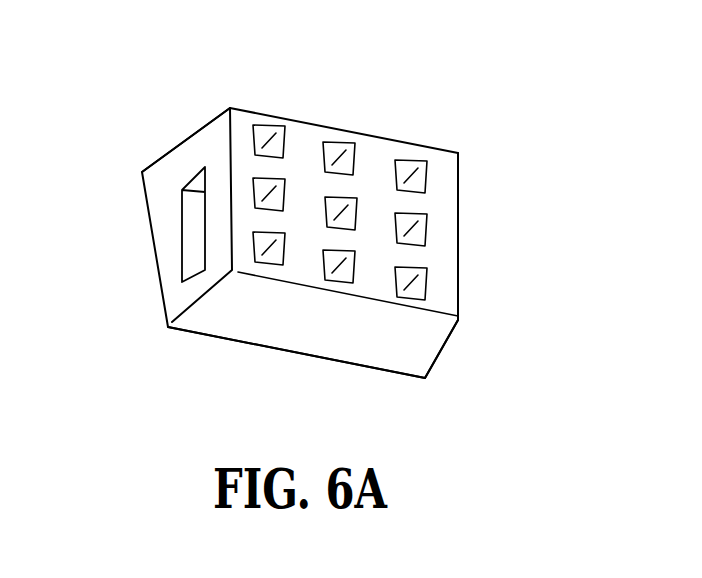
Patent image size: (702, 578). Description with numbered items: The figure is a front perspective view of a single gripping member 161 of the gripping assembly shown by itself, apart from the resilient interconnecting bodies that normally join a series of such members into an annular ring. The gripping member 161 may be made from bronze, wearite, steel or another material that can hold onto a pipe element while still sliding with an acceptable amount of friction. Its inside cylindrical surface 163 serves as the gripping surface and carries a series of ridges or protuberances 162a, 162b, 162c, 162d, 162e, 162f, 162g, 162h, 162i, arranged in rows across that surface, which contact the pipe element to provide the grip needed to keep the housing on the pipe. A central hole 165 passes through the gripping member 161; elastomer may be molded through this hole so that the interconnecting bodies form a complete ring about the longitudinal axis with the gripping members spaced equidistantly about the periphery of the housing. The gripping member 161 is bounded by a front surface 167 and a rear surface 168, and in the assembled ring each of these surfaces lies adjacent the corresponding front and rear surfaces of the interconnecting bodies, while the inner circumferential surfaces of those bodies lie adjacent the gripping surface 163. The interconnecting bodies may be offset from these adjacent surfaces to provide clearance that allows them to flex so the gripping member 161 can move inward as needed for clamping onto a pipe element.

The gripping member 161 is at (355, 126).
The protuberance 162a is at (260, 125).
The protuberance 162b is at (328, 142).
The protuberance 162c is at (358, 197).
The protuberance 162d is at (255, 178).
The protuberance 162e is at (410, 160).
The protuberance 162f is at (427, 220).
The protuberance 162g is at (263, 266).
The protuberance 162h is at (340, 283).
The protuberance 162i is at (428, 273).
The inside cylindrical surface 163 is at (449, 242).
The central hole 165 is at (190, 235).
The front surface 167 is at (420, 347).
The rear surface 168 is at (143, 170).